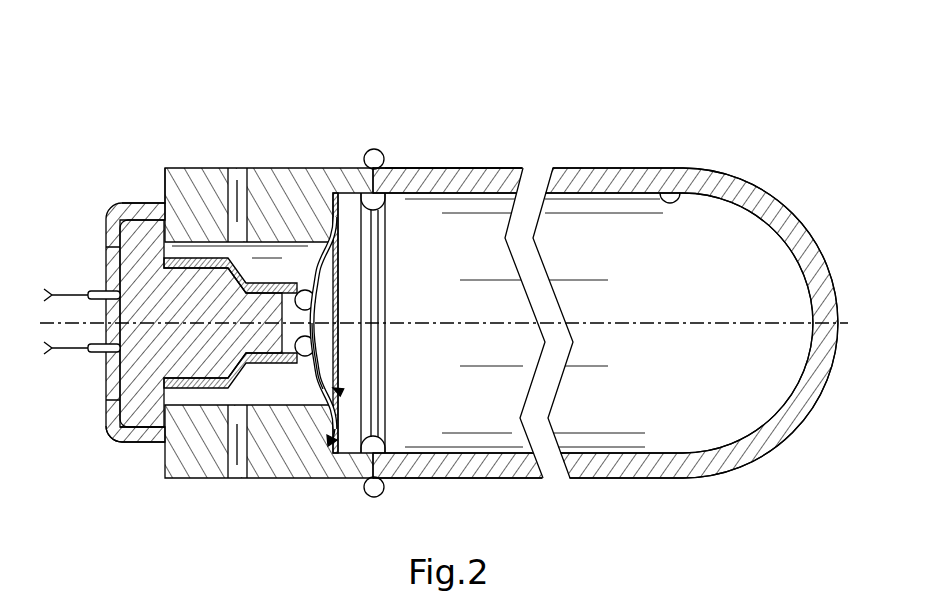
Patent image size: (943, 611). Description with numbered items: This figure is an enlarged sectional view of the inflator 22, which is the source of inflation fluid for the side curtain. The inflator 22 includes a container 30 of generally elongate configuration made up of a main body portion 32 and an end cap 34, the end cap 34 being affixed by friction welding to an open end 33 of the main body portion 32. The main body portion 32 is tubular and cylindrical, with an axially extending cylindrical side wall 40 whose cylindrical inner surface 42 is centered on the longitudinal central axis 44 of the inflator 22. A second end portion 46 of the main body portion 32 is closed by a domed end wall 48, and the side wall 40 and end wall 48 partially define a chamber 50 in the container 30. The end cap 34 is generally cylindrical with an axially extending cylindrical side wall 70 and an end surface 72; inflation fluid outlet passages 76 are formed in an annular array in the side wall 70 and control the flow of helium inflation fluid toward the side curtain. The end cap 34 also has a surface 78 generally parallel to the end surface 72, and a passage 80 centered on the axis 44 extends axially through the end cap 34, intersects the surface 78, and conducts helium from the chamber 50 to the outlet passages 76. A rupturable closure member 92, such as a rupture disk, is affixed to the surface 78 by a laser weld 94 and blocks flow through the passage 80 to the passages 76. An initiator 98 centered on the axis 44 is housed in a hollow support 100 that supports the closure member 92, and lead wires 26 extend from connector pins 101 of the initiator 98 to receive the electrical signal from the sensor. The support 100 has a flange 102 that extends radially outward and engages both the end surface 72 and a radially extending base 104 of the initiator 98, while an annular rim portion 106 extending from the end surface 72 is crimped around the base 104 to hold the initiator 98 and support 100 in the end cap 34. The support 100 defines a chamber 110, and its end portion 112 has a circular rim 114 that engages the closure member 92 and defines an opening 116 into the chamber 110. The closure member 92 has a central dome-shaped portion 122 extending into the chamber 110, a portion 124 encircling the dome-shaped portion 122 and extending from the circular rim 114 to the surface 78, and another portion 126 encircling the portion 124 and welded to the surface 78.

The inflator 22 is at (544, 110).
The lead wires 26 is at (48, 300).
The container 30 is at (452, 164).
The main body portion 32 is at (593, 168).
The open end 33 is at (392, 168).
The end cap 34 is at (343, 170).
The side wall 40 is at (633, 168).
The inner surface 42 is at (682, 199).
The longitudinal central axis 44 is at (626, 323).
The second end portion 46 is at (677, 478).
The end wall 48 is at (798, 425).
The chamber 50 is at (702, 412).
The side wall 70 is at (193, 168).
The end surface 72 is at (164, 190).
The inflation fluid outlet passages 76 is at (240, 185).
The surface 78 is at (338, 226).
The passage 80 is at (320, 255).
The rupturable closure member 92 is at (341, 392).
The laser weld 94 is at (322, 193).
The initiator 98 is at (140, 282).
The hollow support 100 is at (263, 390).
The connector pins 101 is at (100, 294).
The flange 102 is at (155, 427).
The base 104 is at (110, 432).
The annular rim portion 106 is at (110, 232).
The chamber 110 is at (338, 307).
The end portion 112 is at (290, 395).
The circular rim 114 is at (321, 350).
The opening 116 is at (321, 340).
The dome-shaped portion 122 is at (331, 207).
The portion 124 is at (302, 400).
The portion 126 is at (328, 446).